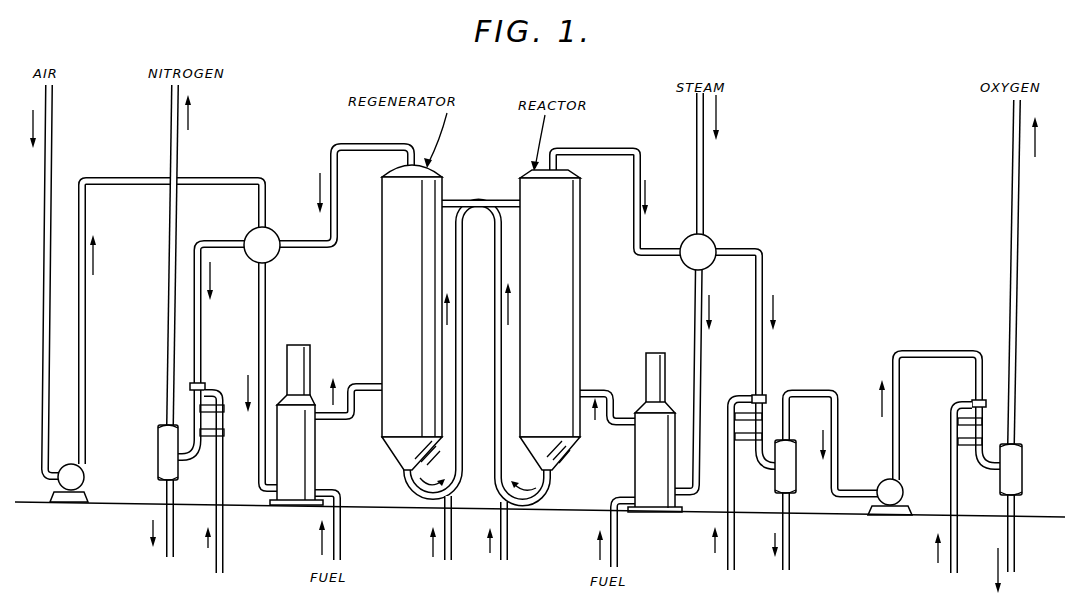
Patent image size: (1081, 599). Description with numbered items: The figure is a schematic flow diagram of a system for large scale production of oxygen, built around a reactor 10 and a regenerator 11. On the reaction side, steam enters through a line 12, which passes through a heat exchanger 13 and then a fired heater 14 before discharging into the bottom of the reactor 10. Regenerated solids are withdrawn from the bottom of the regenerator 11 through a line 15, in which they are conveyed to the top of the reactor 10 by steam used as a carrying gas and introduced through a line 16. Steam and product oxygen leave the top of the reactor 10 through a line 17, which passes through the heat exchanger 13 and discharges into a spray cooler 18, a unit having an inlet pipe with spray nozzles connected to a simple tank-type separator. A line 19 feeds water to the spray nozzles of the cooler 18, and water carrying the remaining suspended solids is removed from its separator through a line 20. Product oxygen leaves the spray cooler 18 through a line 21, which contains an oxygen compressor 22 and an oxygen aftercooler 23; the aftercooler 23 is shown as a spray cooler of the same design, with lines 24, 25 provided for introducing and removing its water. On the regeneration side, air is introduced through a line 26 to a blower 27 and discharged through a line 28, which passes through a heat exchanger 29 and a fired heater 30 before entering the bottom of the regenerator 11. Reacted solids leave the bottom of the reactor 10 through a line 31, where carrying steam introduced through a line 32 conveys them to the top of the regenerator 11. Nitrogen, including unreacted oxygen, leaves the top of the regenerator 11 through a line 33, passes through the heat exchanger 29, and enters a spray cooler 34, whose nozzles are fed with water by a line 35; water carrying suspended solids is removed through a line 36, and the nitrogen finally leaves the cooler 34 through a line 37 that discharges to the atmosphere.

The reactor 10 is at (550, 320).
The regenerator 11 is at (412, 317).
The line 12 is at (703, 153).
The heat exchanger 13 is at (706, 245).
The fired heater 14 is at (639, 460).
The line 15 is at (462, 297).
The line 16 is at (452, 531).
The line 17 is at (641, 167).
The spray cooler 18 is at (797, 448).
The line 19 is at (735, 531).
The line 20 is at (790, 531).
The line 21 is at (813, 391).
The oxygen compressor 22 is at (882, 482).
The oxygen aftercooler 23 is at (1025, 462).
The line 24 is at (957, 531).
The line 25 is at (1014, 538).
The line 26 is at (52, 137).
The blower 27 is at (80, 486).
The line 28 is at (87, 316).
The heat exchanger 29 is at (254, 234).
The fired heater 30 is at (303, 452).
The line 31 is at (497, 358).
The line 32 is at (508, 531).
The line 33 is at (330, 157).
The spray cooler 34 is at (160, 433).
The line 35 is at (224, 523).
The line 36 is at (174, 521).
The line 37 is at (178, 137).